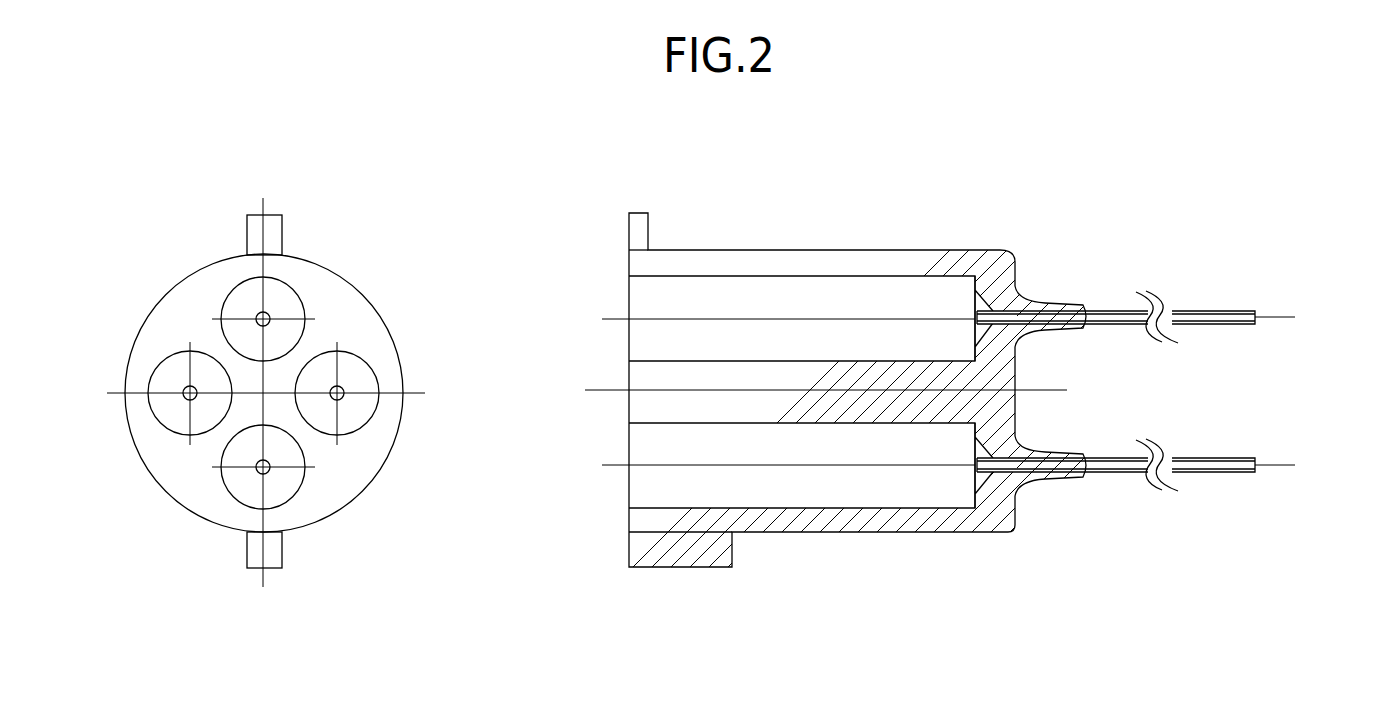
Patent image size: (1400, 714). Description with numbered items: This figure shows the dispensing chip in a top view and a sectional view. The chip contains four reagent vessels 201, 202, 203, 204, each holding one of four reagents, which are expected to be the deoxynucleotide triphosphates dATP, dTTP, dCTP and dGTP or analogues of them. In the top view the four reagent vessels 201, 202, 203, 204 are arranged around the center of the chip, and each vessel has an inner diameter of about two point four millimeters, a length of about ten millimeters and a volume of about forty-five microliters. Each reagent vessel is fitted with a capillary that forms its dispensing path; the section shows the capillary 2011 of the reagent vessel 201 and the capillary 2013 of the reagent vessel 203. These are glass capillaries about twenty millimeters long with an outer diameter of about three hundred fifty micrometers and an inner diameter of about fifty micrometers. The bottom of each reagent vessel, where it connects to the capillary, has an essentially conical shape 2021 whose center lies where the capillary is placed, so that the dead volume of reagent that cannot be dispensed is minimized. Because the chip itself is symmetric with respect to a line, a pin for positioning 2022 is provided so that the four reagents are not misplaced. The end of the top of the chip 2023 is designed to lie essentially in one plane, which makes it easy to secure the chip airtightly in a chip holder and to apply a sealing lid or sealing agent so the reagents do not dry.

The reagent vessel 201 is at (602, 293).
The reagent vessel 202 is at (375, 393).
The reagent vessel 203 is at (602, 501).
The reagent vessel 204 is at (142, 393).
The capillary 2011 is at (1171, 303).
The capillary 2013 is at (1179, 465).
The conical shape 2021 is at (980, 252).
The pin for positioning 2022 is at (697, 560).
The end of the top of the chip 2023 is at (629, 265).